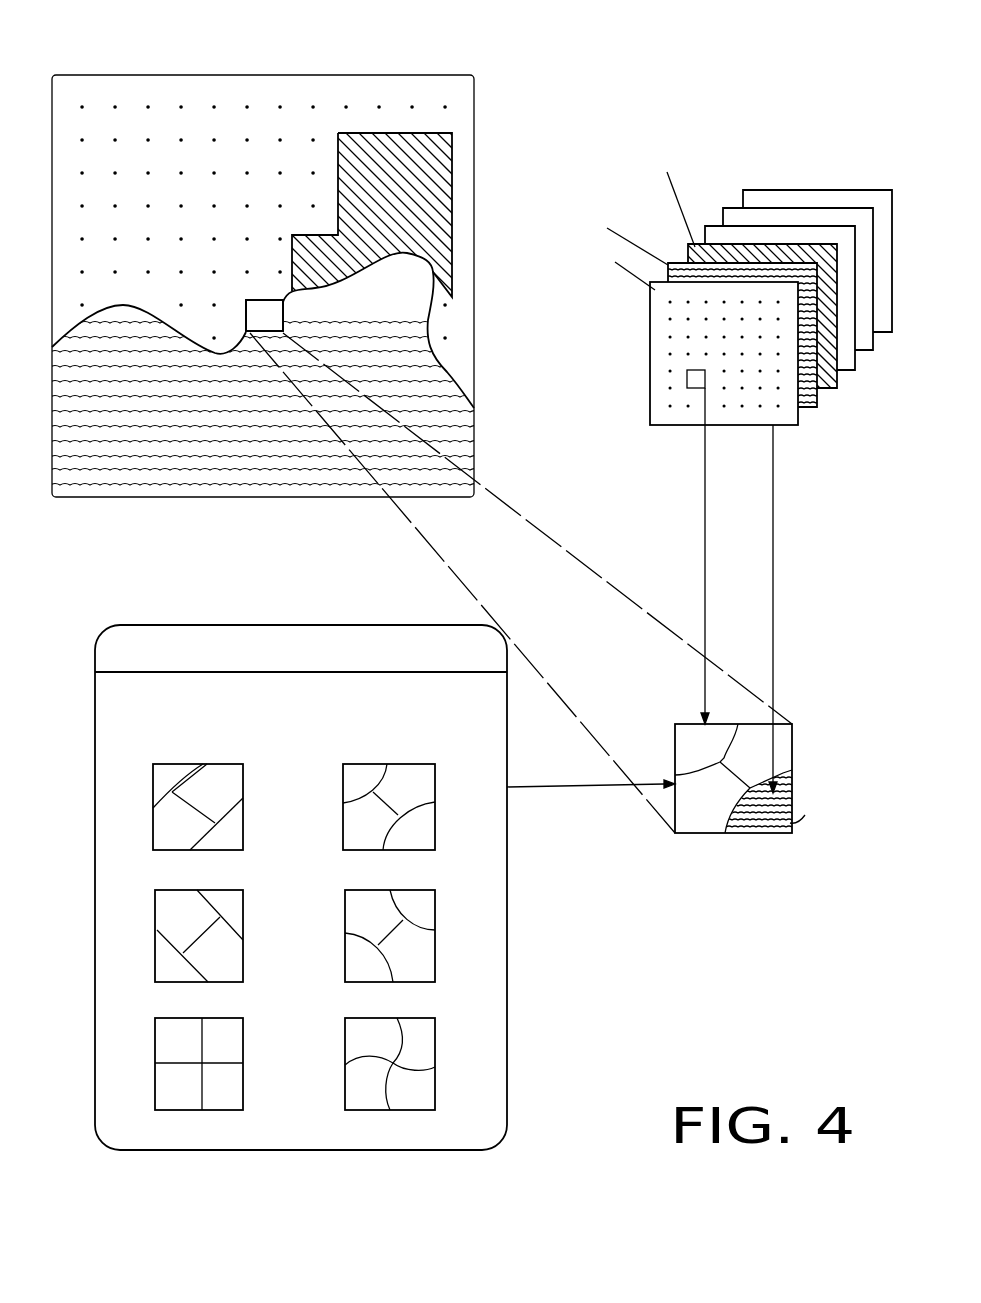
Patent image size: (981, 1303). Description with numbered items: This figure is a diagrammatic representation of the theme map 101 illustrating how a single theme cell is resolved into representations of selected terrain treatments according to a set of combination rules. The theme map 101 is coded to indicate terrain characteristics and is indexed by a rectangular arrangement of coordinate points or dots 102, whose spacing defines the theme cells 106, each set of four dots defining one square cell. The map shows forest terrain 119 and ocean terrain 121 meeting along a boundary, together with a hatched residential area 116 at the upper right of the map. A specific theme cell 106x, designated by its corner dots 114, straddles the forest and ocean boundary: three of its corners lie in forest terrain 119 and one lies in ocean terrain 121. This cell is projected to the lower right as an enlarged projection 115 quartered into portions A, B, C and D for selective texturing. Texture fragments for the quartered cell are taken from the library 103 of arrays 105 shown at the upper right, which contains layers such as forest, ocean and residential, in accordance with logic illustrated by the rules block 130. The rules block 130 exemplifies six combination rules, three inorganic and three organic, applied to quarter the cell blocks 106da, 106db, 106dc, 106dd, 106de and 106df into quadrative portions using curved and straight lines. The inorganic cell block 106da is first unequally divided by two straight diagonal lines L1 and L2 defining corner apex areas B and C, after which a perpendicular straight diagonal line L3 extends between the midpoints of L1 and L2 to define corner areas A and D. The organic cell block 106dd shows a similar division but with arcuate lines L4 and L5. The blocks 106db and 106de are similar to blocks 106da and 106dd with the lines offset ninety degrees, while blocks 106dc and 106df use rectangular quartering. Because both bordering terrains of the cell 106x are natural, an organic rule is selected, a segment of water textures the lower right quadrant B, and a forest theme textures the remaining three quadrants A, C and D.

The theme map 101 is at (478, 95).
The dots 102 is at (408, 107).
The library 103 is at (650, 367).
The arrays 105 is at (805, 405).
The theme cells 106 is at (137, 118).
The specific theme cell 106x is at (246, 322).
The dots 114 is at (280, 327).
The enlarged projection 115 is at (810, 407).
The residential attribute layer 116 is at (452, 265).
The forest terrain 119 is at (52, 90).
The ocean terrain 121 is at (148, 468).
The rules block 130 is at (500, 1075).
The inorganic cell block 106da is at (283, 795).
The cell block 106db is at (283, 920).
The cell block 106dc is at (283, 1033).
The organic cell block 106dd is at (437, 790).
The cell block 106de is at (435, 932).
The cell block 106df is at (435, 1050).
The straight diagonal line L1 is at (155, 795).
The straight diagonal line L2 is at (200, 850).
The perpendicular straight diagonal line L3 is at (203, 770).
The arcuate line L4 is at (390, 766).
The arcuate line L5 is at (383, 850).